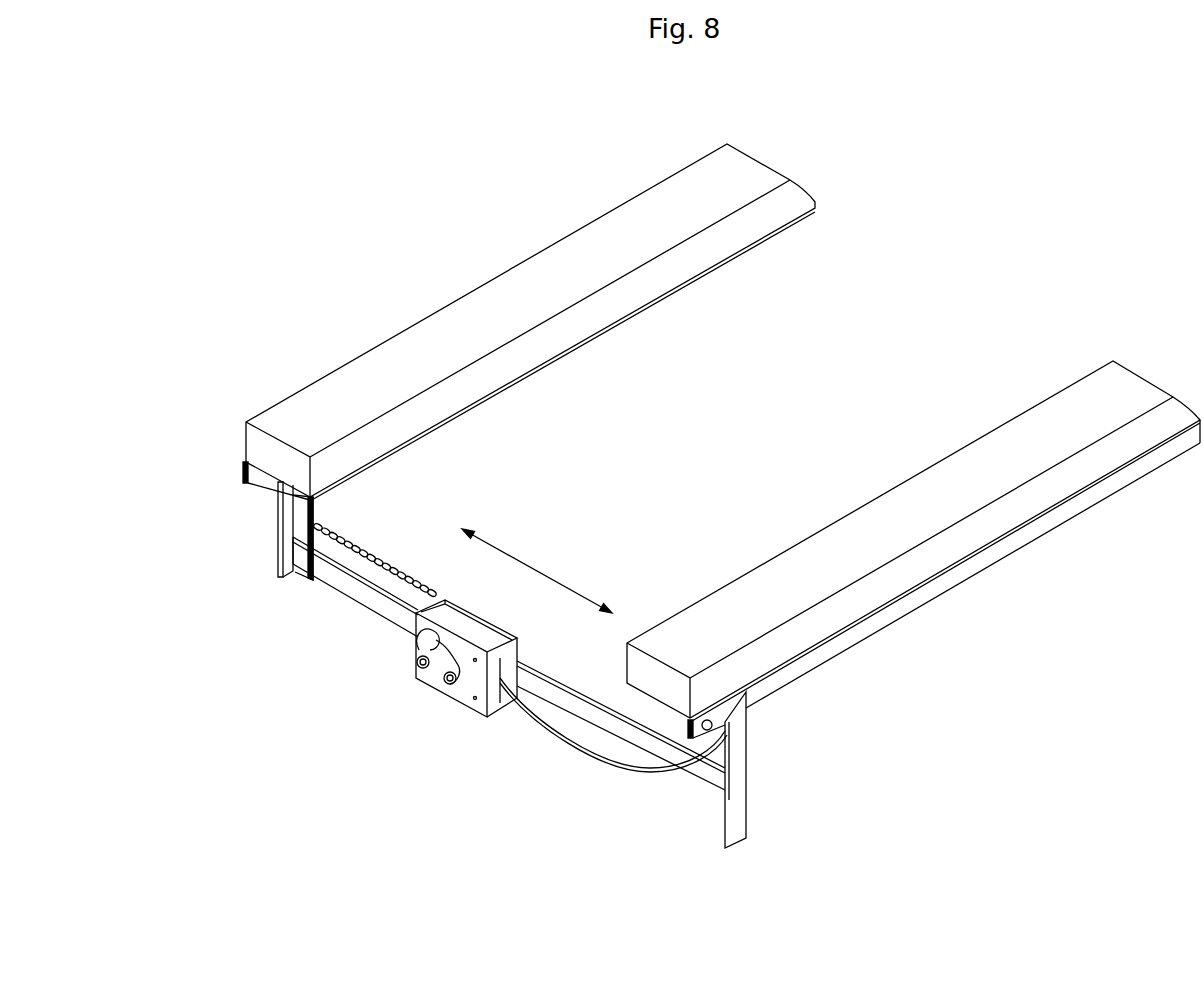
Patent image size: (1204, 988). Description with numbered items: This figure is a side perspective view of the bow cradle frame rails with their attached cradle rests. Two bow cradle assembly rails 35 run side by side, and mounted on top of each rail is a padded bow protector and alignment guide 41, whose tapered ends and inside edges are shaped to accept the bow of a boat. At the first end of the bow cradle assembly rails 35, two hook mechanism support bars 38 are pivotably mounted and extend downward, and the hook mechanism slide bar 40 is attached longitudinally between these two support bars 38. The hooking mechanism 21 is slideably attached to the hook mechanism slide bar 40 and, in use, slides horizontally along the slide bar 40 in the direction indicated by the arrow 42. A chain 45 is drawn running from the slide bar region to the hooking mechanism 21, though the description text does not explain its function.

The padded bow protector and alignment guide 41 is at (527, 258).
The bow cradle assembly rail 35 is at (913, 628).
The hook mechanism support bar 38 is at (266, 568).
The hook mechanism slide bar 40 is at (351, 604).
The arrow 42 is at (537, 571).
The chain 45 is at (388, 542).
The hooking mechanism 21 is at (433, 708).